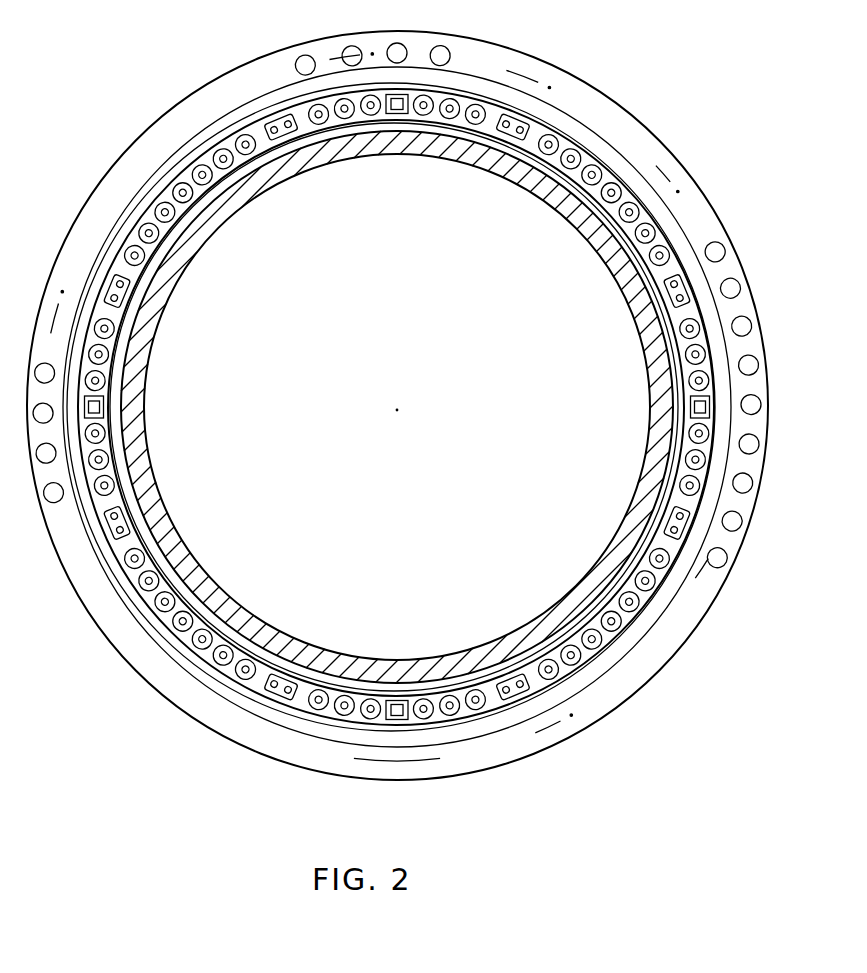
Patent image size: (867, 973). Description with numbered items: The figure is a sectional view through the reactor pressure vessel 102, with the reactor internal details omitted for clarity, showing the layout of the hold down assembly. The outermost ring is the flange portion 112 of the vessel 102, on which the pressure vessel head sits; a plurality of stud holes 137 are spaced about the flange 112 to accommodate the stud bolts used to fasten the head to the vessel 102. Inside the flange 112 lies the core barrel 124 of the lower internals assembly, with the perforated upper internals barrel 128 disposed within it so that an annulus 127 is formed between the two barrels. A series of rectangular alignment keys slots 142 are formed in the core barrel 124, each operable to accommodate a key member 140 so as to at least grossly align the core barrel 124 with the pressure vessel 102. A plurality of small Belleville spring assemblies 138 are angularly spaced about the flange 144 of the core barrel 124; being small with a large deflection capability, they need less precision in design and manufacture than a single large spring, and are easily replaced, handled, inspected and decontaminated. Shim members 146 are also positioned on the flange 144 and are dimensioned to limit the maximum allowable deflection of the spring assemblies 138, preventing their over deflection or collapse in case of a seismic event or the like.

The reactor pressure vessel 102 is at (681, 656).
The flange portion 112 is at (683, 183).
The core barrel 124 is at (604, 652).
The annulus 127 is at (494, 677).
The upper internals barrel 128 is at (442, 673).
The stud holes 137 is at (54, 494).
The Belleville spring assemblies 138 is at (597, 165).
The key member 140 is at (421, 93).
The alignment keys slots 142 is at (388, 92).
The flange 144 is at (606, 627).
The shim members 146 is at (526, 120).